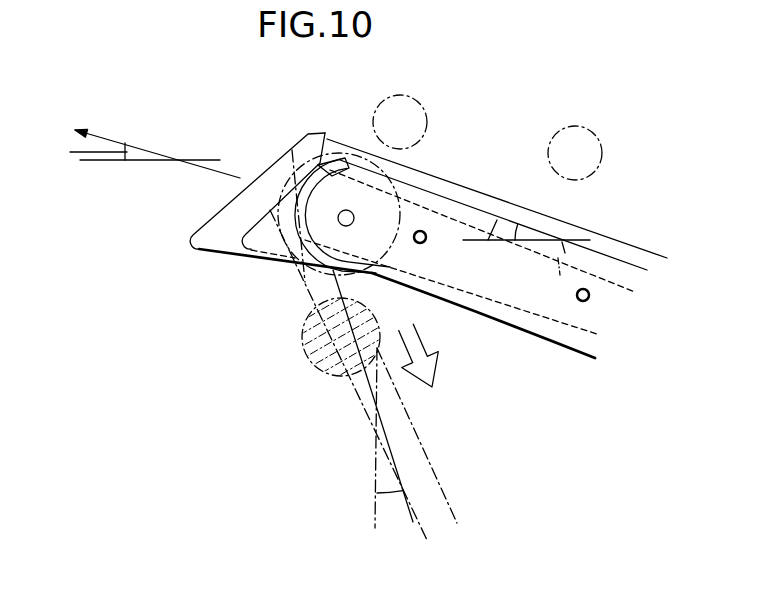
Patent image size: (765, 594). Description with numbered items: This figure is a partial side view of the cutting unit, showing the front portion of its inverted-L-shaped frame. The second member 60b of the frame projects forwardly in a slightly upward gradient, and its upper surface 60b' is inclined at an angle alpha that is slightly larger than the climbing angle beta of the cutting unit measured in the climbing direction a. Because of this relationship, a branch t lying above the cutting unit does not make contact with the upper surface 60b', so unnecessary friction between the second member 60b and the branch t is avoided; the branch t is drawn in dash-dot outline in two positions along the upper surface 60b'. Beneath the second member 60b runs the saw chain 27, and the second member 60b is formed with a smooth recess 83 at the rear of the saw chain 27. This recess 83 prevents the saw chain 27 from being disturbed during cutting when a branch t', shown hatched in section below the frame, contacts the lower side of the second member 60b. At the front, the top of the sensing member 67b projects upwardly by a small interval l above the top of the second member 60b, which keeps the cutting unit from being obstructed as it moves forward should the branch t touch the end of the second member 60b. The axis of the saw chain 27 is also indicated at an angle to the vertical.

The latch plate 67b is at (277, 161).
The small interval l is at (349, 158).
The upper surface 60b' is at (510, 220).
The second member 60b is at (455, 333).
The smooth recess 83 is at (384, 285).
The saw chain 27 is at (363, 411).
The branch t is at (487, 123).
The branch t' is at (337, 337).
The climbing direction a is at (110, 139).